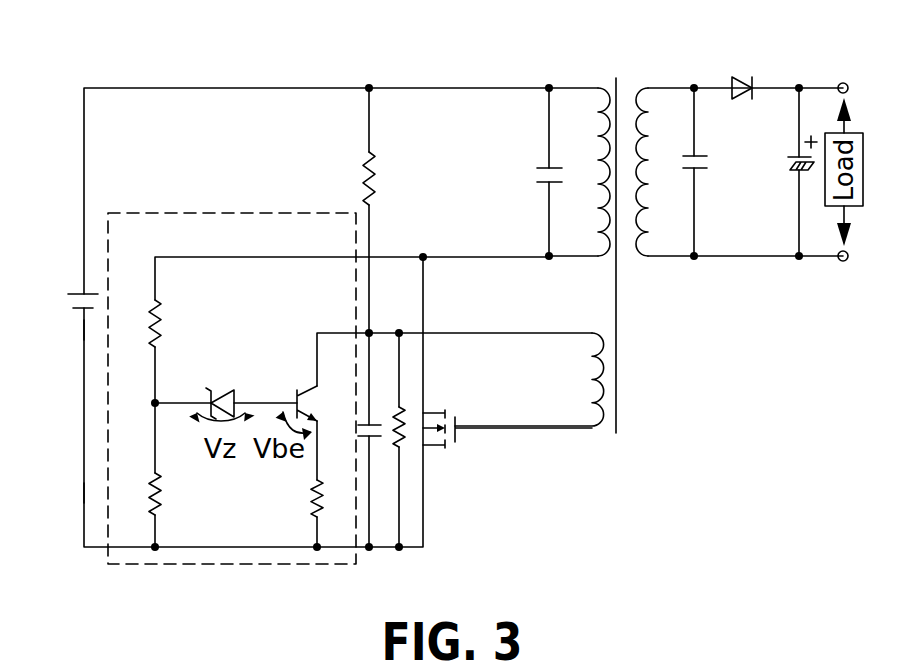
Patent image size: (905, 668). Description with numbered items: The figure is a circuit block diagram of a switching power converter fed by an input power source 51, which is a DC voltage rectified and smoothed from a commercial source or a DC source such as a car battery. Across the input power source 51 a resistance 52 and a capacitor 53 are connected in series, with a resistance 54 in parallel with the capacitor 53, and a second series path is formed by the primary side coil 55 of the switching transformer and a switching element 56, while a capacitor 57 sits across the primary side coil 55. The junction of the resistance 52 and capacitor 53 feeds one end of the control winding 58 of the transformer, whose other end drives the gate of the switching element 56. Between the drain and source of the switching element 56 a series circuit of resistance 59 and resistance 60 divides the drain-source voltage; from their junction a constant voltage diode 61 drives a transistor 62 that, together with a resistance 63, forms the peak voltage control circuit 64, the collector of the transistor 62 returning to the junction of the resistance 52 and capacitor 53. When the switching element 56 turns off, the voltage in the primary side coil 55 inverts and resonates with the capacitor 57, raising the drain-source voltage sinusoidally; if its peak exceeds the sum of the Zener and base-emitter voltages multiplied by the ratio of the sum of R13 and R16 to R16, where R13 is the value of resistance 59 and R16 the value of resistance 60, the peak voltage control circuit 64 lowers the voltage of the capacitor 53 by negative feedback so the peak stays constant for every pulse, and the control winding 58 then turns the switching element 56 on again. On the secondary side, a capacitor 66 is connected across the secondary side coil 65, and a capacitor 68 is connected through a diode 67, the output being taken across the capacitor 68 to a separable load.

The input power source 51 is at (78, 293).
The resistance value of resistance 59 R13 is at (127, 323).
The resistance value of resistance 60 R16 is at (127, 486).
The resistance 52 is at (374, 195).
The capacitor 53 is at (379, 440).
The resistance 54 is at (400, 440).
The primary side coil of switching transformer 55 is at (598, 85).
The switching element 56 is at (434, 411).
The capacitor 57 is at (535, 175).
The control winding of switching transformer 58 is at (598, 425).
The resistance 59 is at (160, 342).
The resistance 60 is at (162, 500).
The constant voltage diode 61 is at (222, 392).
The transistor 62 is at (311, 388).
The resistance 63 is at (313, 494).
The peak voltage control circuit 64 is at (120, 212).
The secondary side coil of switching transformer 65 is at (640, 86).
The capacitor 66 is at (705, 170).
The diode 67 is at (745, 76).
The capacitor 68 is at (788, 162).